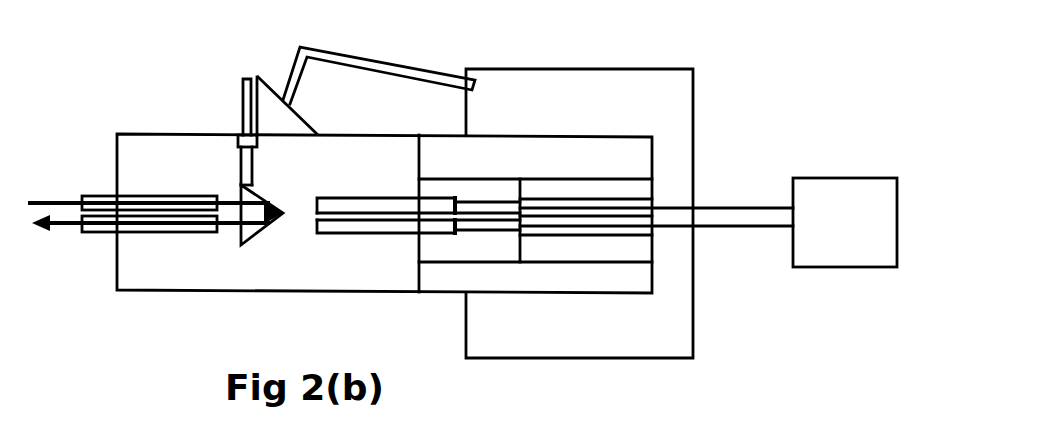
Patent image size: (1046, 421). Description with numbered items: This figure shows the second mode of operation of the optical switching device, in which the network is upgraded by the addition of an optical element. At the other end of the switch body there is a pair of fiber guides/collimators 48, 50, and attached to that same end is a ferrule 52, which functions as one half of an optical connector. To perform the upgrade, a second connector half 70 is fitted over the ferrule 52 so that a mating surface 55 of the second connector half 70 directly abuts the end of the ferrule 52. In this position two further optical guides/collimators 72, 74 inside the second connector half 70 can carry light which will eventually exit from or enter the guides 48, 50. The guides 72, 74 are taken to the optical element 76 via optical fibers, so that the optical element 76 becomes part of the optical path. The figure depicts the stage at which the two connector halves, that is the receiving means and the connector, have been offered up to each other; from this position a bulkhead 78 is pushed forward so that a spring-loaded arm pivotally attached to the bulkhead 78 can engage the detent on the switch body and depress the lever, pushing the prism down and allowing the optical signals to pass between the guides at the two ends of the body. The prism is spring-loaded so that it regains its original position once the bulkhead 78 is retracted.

The fiber guide/collimator 48 is at (489, 198).
The fiber guide/collimator 50 is at (487, 235).
The ferrule 52 is at (437, 248).
The mating surface 55 is at (520, 237).
The second connector half 70 is at (617, 155).
The optical guide/collimator 72 is at (622, 200).
The optical guide/collimator 74 is at (618, 235).
The optical element 76 is at (847, 267).
The bulkhead 78 is at (667, 70).